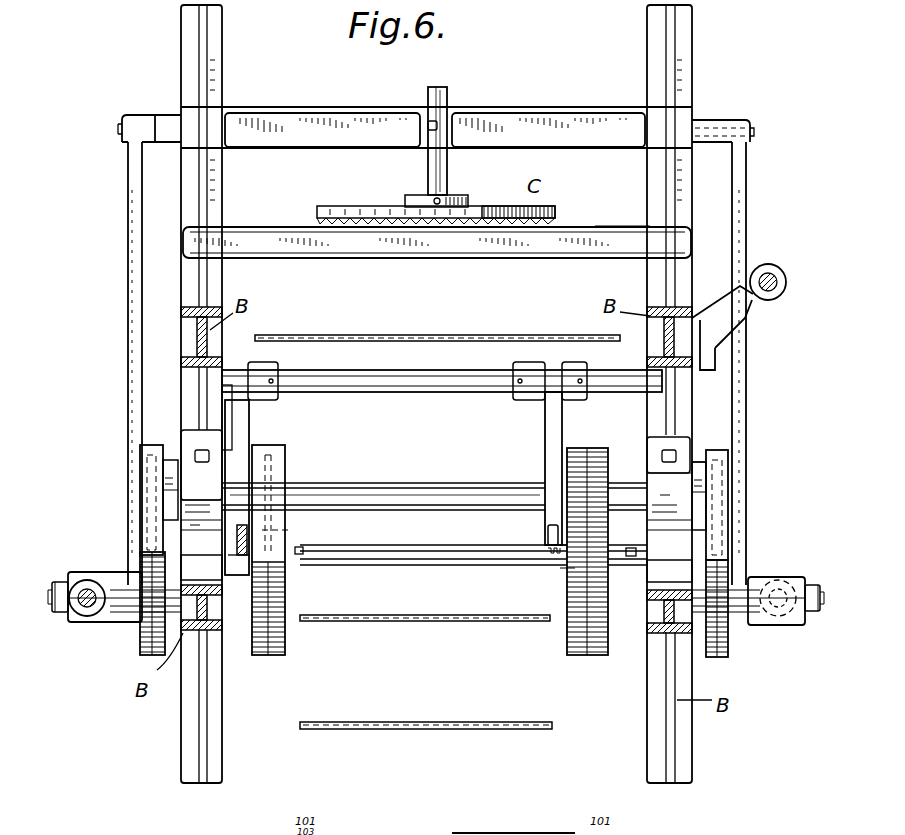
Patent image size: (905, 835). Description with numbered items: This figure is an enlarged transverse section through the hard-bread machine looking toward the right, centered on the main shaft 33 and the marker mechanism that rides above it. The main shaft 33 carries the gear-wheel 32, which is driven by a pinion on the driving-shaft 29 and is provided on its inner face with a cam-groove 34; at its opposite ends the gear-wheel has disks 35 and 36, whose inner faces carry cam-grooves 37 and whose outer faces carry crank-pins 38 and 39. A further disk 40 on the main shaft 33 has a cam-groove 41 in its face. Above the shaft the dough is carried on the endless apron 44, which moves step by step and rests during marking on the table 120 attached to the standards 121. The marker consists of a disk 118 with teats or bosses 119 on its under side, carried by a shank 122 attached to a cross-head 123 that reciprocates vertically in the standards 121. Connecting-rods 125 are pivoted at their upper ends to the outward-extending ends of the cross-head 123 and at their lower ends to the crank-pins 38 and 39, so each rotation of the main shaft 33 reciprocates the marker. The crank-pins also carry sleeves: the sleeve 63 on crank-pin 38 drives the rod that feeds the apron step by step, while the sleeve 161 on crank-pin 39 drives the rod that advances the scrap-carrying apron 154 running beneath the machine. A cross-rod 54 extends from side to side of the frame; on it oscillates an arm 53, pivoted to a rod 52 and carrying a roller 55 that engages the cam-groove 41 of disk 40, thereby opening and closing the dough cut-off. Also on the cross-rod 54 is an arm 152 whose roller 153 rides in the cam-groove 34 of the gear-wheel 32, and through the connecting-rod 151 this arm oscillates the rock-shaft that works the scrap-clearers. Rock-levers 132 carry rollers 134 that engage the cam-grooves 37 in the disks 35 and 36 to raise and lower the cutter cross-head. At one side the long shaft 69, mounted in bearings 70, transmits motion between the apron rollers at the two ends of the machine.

The standards 121 is at (222, 182).
The cross-head 123 is at (555, 114).
The shank 122 is at (428, 177).
The disk 118 is at (487, 206).
The teats or bosses 119 is at (325, 216).
The endless apron 44 is at (370, 334).
The table 120 is at (380, 235).
The connecting-rods 125 is at (128, 237).
The shaft 69 is at (775, 270).
The bearings 70 is at (763, 300).
The cross-rod 54 is at (396, 372).
The arm 53 is at (240, 424).
The rod 52 is at (243, 556).
The disk 35 is at (152, 445).
The disk 36 is at (715, 452).
The rock-levers 132 is at (172, 470).
The rollers 134 is at (700, 463).
The cam-grooves 37 is at (150, 508).
The disk 40 is at (285, 448).
The cam-groove 41 is at (270, 480).
The roller 55 is at (270, 540).
The driving-shaft 29 is at (462, 490).
The arm 152 is at (545, 428).
The roller 153 is at (560, 520).
The connecting-rod 151 is at (548, 546).
The main shaft 33 is at (427, 560).
The cam-groove 34 is at (565, 573).
The gear-wheel 32 is at (598, 449).
The sleeve 63 is at (86, 572).
The crank-pin 38 is at (54, 588).
The sleeve 161 is at (766, 630).
The crank-pin 39 is at (808, 583).
The endless scrap-carrying apron 154 is at (365, 618).